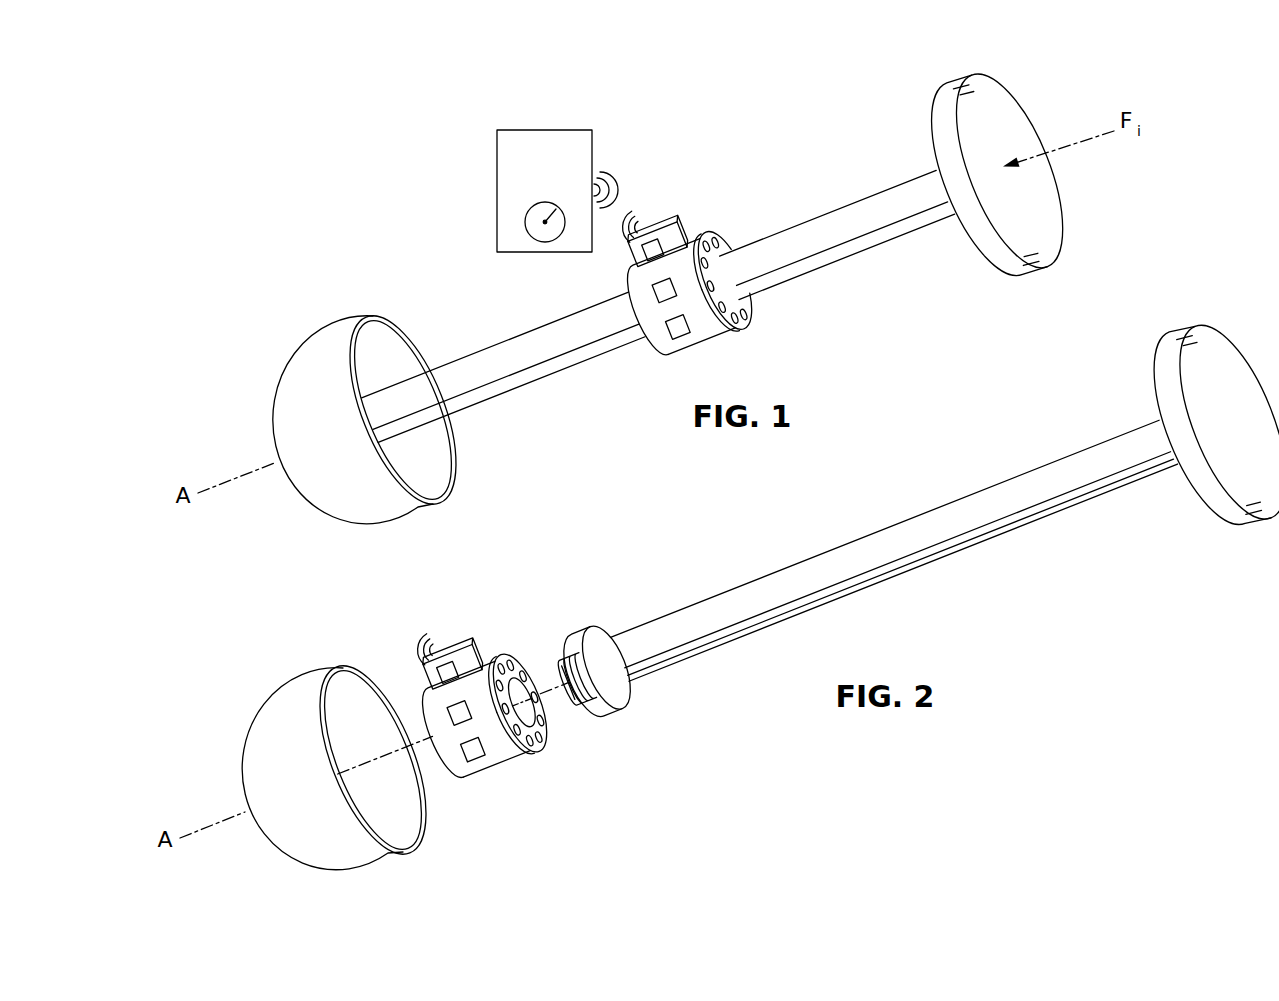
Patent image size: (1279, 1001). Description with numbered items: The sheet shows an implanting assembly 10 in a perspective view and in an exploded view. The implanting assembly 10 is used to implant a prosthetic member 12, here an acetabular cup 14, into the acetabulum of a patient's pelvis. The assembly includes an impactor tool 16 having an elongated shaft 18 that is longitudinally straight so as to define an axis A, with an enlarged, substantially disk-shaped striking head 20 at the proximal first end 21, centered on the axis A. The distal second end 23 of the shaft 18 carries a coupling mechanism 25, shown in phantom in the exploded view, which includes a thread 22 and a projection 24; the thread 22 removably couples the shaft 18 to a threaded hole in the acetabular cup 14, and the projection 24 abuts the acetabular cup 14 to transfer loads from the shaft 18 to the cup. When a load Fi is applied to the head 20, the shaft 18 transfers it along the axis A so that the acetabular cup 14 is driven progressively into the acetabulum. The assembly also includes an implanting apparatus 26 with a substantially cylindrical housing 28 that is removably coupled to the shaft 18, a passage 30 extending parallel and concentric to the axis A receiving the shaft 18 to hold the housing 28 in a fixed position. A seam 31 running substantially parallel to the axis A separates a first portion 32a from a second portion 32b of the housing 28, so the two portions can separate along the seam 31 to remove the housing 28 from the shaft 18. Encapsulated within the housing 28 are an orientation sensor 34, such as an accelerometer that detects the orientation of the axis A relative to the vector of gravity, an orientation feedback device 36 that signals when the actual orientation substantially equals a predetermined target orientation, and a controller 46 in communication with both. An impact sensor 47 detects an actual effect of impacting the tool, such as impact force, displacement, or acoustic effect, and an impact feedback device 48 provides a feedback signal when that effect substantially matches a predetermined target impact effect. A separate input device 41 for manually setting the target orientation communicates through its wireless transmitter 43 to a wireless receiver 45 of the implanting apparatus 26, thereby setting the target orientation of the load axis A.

In FIG. 1, the implanting assembly 10 is at (797, 112).
In FIG. 2, the implanting assembly 10 is at (918, 437).
In FIG. 1, the prosthetic member 12 is at (336, 312).
In FIG. 2, the prosthetic member 12 is at (307, 669).
In FIG. 1, the acetabular cup 14 is at (365, 500).
In FIG. 2, the acetabular cup 14 is at (300, 830).
In FIG. 1, the impactor tool 16 is at (810, 212).
In FIG. 2, the impactor tool 16 is at (860, 536).
In FIG. 2, the elongated shaft 18 is at (978, 535).
In FIG. 1, the enlarged striking plate or head 20 is at (990, 112).
In FIG. 2, the enlarged striking plate or head 20 is at (1212, 358).
In FIG. 1, the proximal or first end 21 is at (958, 90).
In FIG. 2, the proximal or first end 21 is at (1180, 338).
In FIG. 2, the thread 22 is at (588, 705).
In FIG. 1, the distal or second end 23 is at (378, 358).
In FIG. 2, the distal or second end 23 is at (566, 640).
In FIG. 2, the projection 24 is at (625, 712).
In FIG. 2, the coupling mechanism 25 is at (598, 614).
In FIG. 1, the implanting apparatus 26 is at (698, 357).
In FIG. 2, the implanting apparatus 26 is at (494, 778).
In FIG. 1, the housing 28 is at (642, 358).
In FIG. 2, the housing 28 is at (465, 770).
In FIG. 2, the passage 30 is at (540, 722).
In FIG. 1, the seam 31 is at (642, 306).
In FIG. 2, the seam 31 is at (425, 700).
In FIG. 1, the first portion 32a is at (706, 235).
In FIG. 2, the first portion 32a is at (492, 665).
In FIG. 1, the second portion 32b is at (728, 325).
In FIG. 2, the second portion 32b is at (522, 745).
In FIG. 1, the orientation sensor 34 is at (678, 228).
In FIG. 2, the orientation sensor 34 is at (472, 648).
In FIG. 1, the orientation feedback device 36 is at (730, 238).
In FIG. 2, the orientation feedback device 36 is at (520, 668).
In FIG. 1, the input device 41 is at (497, 190).
In FIG. 1, the wireless transmitter 43 is at (601, 184).
In FIG. 1, the wireless receiver 45 is at (668, 203).
In FIG. 2, the wireless receiver 45 is at (450, 640).
In FIG. 1, the controller 46 is at (637, 248).
In FIG. 2, the controller 46 is at (437, 652).
In FIG. 1, the impact sensor 47 is at (652, 338).
In FIG. 2, the impact sensor 47 is at (440, 775).
In FIG. 1, the impact feedback device 48 is at (758, 303).
In FIG. 2, the impact feedback device 48 is at (536, 745).